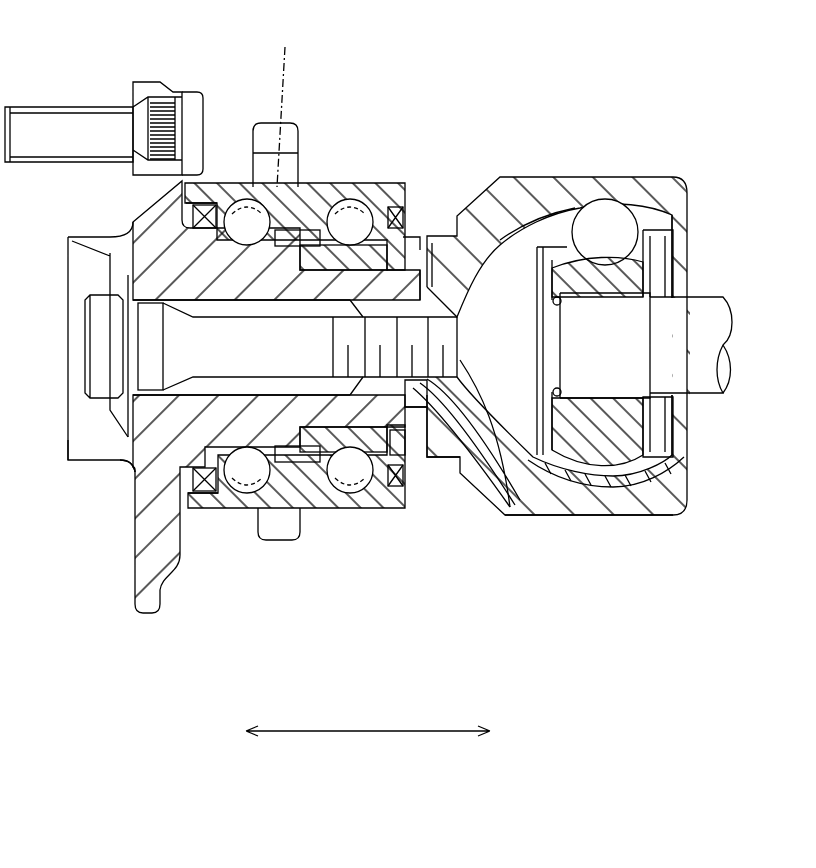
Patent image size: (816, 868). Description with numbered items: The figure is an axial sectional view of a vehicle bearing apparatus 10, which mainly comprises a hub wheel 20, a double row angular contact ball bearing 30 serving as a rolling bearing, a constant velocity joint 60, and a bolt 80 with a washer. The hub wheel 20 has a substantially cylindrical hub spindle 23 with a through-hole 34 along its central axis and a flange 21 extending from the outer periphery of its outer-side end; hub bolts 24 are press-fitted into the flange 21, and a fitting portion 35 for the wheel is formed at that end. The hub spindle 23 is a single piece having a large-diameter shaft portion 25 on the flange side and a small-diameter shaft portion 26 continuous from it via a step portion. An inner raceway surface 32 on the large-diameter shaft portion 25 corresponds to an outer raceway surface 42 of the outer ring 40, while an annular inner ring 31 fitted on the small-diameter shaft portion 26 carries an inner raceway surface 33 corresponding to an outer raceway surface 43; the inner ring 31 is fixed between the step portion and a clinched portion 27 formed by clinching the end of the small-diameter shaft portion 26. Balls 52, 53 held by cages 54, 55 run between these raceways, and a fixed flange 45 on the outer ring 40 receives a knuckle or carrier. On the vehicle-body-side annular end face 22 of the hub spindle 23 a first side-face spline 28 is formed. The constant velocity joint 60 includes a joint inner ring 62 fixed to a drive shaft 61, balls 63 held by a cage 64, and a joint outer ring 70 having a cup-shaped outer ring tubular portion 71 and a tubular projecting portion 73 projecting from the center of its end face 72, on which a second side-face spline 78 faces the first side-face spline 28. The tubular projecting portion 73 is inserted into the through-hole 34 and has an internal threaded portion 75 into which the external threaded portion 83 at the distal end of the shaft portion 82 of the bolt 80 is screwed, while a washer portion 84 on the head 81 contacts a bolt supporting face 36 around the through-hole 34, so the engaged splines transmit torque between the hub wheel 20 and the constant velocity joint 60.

The vehicle bearing apparatus 10 is at (582, 75).
The hub wheel 20 is at (117, 220).
The flange 21 is at (147, 90).
The annular end face 22 is at (550, 330).
The hub spindle 23 is at (207, 260).
The hub bolt 24 is at (62, 133).
The large-diameter shaft portion 25 is at (287, 238).
The small-diameter shaft portion 26 is at (407, 240).
The clinched portion 27 is at (382, 490).
The first side-face spline 28 is at (440, 262).
The double row angular contact ball bearing 30 is at (398, 165).
The inner ring 31 is at (405, 243).
The inner raceway surface 32 is at (232, 483).
The inner raceway surface 33 is at (357, 480).
The through-hole 34 is at (200, 392).
The fitting portion 35 is at (83, 453).
The bolt supporting face 36 is at (127, 413).
The outer ring 40 is at (362, 197).
The outer raceway surface 42 is at (258, 500).
The outer raceway surface 43 is at (343, 477).
The fixed flange 45 is at (286, 137).
The ball 52 is at (244, 210).
The ball 53 is at (352, 190).
The cage 54 is at (282, 100).
The cage 55 is at (325, 205).
The constant velocity joint 60 is at (597, 177).
The drive shaft 61 is at (697, 370).
The joint inner ring 62 is at (600, 285).
The ball 63 is at (612, 227).
The cage 64 is at (640, 473).
The joint outer ring 70 is at (547, 519).
The outer ring tubular portion 71 is at (607, 497).
The end face 72 is at (426, 513).
The tubular projecting portion 73 is at (443, 457).
The internal threaded portion 75 is at (497, 470).
The second side-face spline 78 is at (413, 437).
The bolt with a washer 80 is at (83, 385).
The head 81 is at (110, 355).
The shaft portion 82 is at (238, 335).
The external threaded portion 83 is at (467, 467).
The washer portion 84 is at (123, 413).